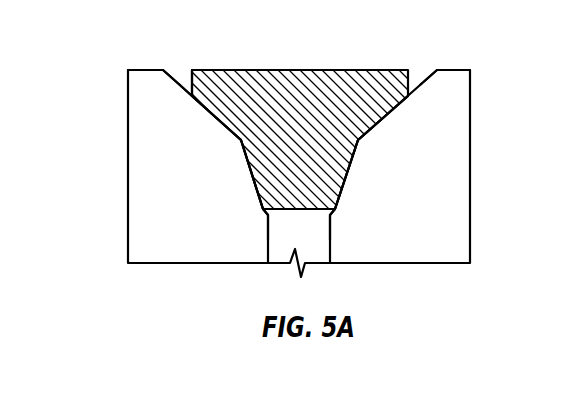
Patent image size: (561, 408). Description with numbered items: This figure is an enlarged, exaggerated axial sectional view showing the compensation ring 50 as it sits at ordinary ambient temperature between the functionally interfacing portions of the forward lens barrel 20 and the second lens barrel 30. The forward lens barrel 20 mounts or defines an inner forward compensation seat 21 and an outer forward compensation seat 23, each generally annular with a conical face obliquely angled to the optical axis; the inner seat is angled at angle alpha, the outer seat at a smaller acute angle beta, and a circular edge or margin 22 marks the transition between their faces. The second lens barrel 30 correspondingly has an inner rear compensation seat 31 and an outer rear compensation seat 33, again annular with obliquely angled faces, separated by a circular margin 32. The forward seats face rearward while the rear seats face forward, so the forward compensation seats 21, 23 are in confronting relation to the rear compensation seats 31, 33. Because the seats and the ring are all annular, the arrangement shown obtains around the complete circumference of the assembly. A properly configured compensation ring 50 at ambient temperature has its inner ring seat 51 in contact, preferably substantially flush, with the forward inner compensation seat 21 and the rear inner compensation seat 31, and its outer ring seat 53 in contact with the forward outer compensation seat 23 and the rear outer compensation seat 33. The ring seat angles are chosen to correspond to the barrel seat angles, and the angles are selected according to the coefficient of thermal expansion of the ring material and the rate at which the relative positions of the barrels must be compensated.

The forward lens barrel 20 is at (143, 183).
The inner forward compensation seat 21 is at (250, 170).
The circular edge or margin 22 is at (240, 140).
The outer forward compensation seat 23 is at (163, 70).
The second lens barrel 30 is at (458, 185).
The inner rear compensation seat 31 is at (333, 212).
The circular margin 32 is at (358, 137).
The outer rear compensation seat 33 is at (437, 70).
The compensation ring 50 is at (303, 71).
The inner ring seat 51 is at (261, 203).
The outer ring seat 53 is at (200, 103).